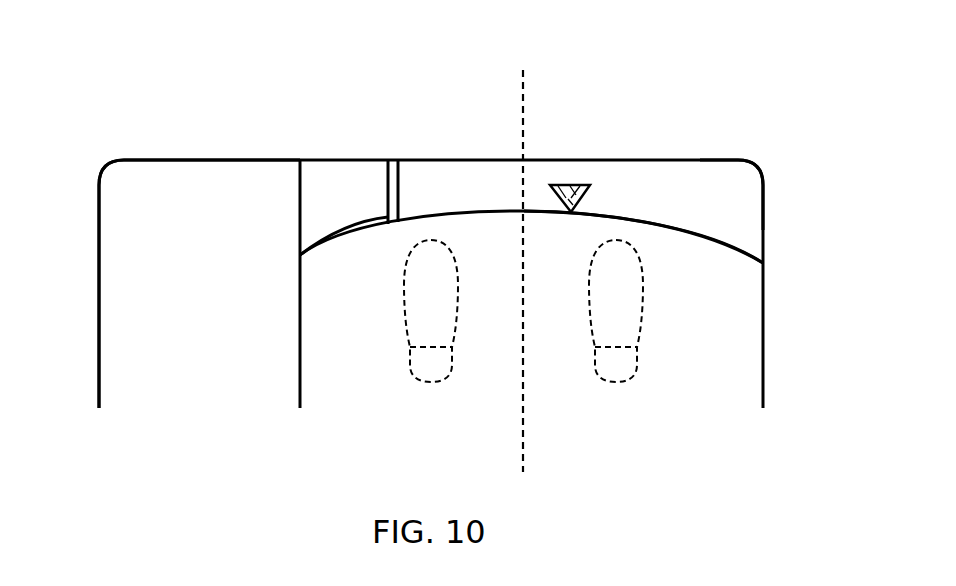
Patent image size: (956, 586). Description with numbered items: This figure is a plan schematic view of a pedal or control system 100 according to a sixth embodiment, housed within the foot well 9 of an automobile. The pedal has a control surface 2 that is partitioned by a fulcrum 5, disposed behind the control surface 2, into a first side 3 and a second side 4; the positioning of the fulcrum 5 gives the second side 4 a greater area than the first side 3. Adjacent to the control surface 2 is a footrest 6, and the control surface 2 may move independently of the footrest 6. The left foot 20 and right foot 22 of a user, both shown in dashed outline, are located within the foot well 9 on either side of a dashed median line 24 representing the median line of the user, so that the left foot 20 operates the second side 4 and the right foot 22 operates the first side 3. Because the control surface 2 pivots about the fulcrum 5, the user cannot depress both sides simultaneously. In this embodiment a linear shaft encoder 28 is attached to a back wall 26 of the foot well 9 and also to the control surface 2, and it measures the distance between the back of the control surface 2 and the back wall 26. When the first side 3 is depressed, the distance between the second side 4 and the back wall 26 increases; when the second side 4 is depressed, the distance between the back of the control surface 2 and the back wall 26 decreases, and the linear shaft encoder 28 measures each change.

The control system or pedal 100 is at (780, 93).
The footrest 6 is at (143, 258).
The back wall 26 is at (735, 160).
The control surface 2 is at (470, 212).
The first side 3 is at (666, 225).
The second side 4 is at (352, 232).
The linear shaft encoder 28 is at (393, 165).
The fulcrum 5 is at (572, 185).
The median line 24 is at (528, 448).
The left foot 20 is at (410, 365).
The right foot 22 is at (622, 382).
The foot well 9 is at (488, 373).